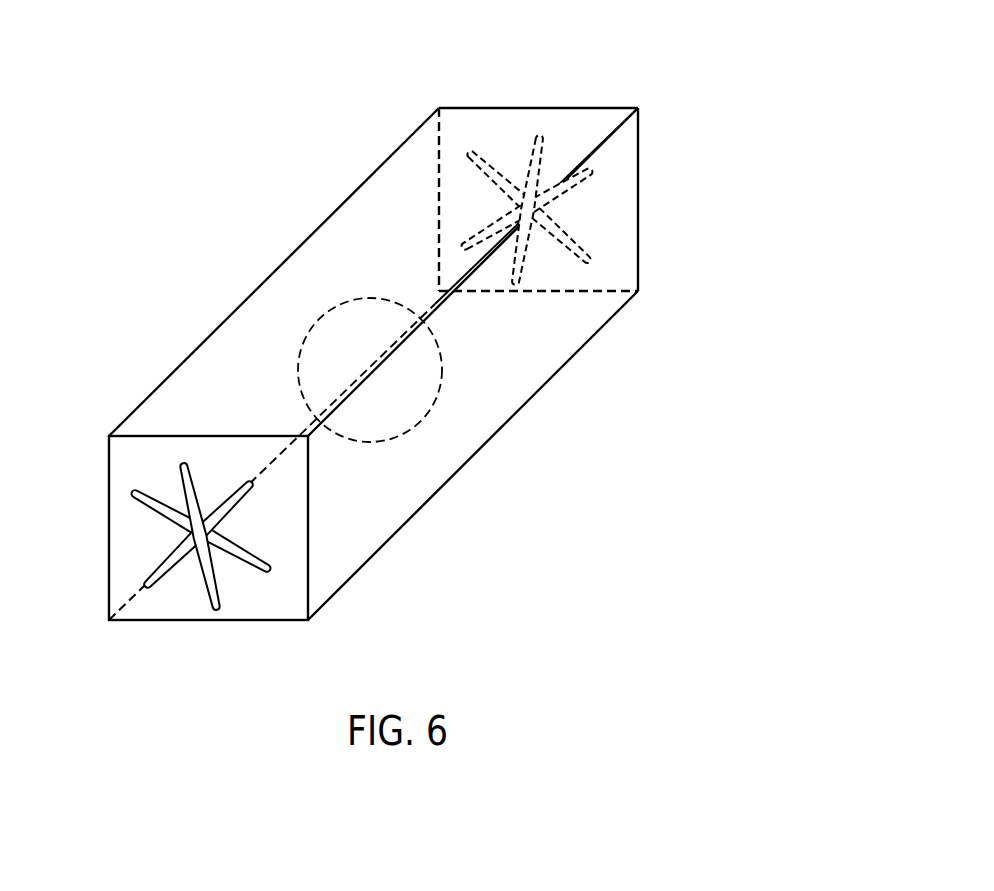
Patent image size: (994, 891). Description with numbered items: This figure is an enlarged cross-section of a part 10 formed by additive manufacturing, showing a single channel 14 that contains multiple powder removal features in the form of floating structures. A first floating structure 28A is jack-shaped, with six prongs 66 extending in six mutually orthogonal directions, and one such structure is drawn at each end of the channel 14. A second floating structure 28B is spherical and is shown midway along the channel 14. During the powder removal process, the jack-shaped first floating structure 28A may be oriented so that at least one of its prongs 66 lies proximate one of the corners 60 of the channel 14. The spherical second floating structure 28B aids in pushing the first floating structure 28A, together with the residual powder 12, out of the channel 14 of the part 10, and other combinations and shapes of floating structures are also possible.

The part 10 is at (548, 78).
The powder 12 is at (373, 390).
The channel 14 is at (172, 610).
The first floating structure 28A is at (385, 404).
The second floating structure 28B is at (403, 412).
The corners 60 is at (107, 623).
The prongs 66 is at (180, 463).